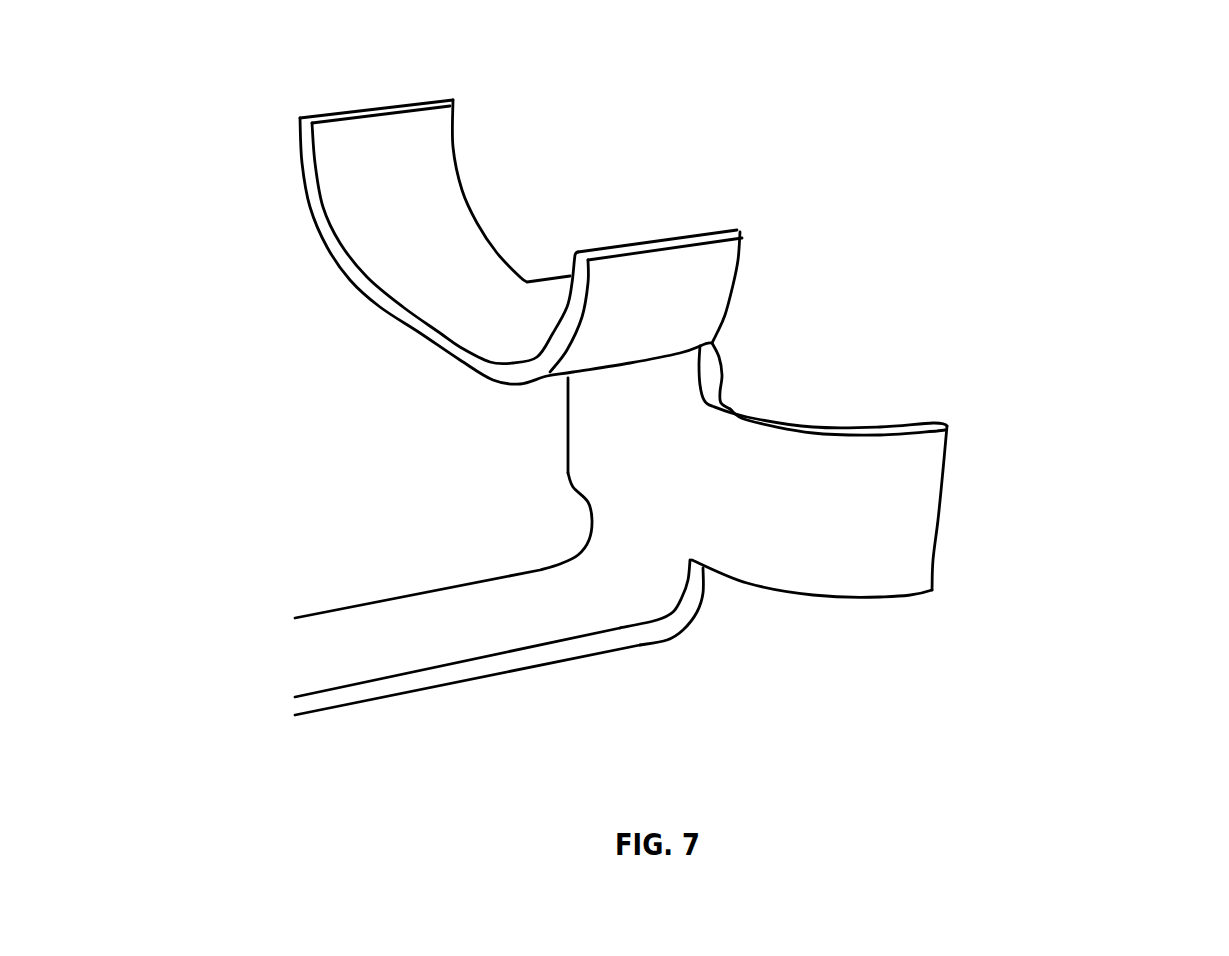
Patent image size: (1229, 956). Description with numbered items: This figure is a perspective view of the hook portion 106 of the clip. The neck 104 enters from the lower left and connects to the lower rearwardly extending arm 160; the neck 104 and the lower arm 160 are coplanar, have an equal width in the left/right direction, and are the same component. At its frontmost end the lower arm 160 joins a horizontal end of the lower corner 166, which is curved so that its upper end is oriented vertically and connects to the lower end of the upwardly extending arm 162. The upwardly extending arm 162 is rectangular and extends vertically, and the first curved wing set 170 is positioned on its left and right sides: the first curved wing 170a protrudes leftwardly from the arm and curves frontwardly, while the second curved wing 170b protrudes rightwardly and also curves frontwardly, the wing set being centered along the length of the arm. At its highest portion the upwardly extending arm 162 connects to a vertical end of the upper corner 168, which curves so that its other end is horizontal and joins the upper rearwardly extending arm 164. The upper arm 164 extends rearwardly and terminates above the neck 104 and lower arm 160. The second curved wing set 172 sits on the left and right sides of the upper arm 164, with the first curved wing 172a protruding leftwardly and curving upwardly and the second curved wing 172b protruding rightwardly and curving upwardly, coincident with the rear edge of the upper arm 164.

The hook portion 106 is at (905, 125).
The second curved wing set 172 is at (612, 123).
The first curved wing 172a is at (362, 163).
The second curved wing 172b is at (657, 273).
The upper rearwardly extending arm 164 is at (500, 317).
The upper corner 168 is at (713, 343).
The upwardly extending arm 162 is at (668, 455).
The first curved wing set 170 is at (1138, 388).
The first curved wing 170a is at (571, 441).
The second curved wing 170b is at (918, 507).
The lower corner 166 is at (683, 627).
The lower rearwardly extending arm 160 is at (462, 635).
The neck 104 is at (305, 677).